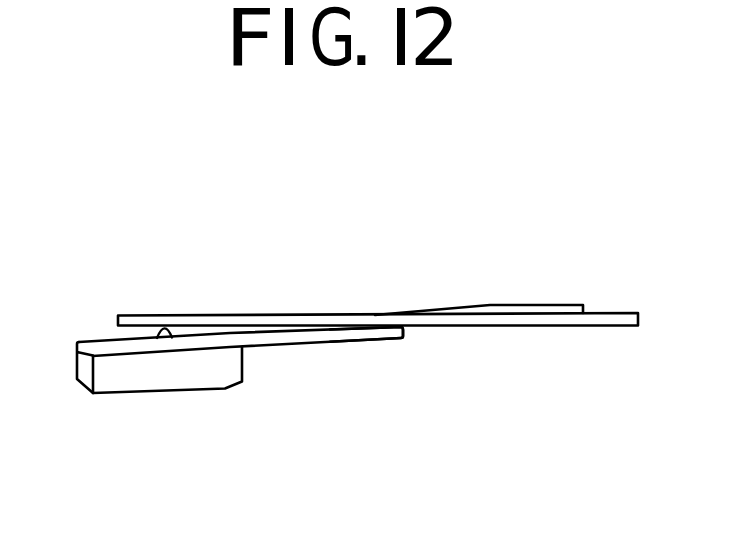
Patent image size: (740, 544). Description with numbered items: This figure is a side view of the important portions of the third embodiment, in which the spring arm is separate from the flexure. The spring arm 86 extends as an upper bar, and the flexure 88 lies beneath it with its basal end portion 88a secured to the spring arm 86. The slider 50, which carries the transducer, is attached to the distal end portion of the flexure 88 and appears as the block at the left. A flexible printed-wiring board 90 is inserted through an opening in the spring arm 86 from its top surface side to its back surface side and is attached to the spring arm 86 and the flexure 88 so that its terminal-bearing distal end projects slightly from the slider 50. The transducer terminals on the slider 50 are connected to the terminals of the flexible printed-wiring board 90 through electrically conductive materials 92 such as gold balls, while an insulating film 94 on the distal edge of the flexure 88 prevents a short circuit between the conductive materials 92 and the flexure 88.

The slider 50 is at (165, 384).
The spring arm 86 is at (208, 315).
The flexure 88 is at (288, 345).
The basal end portion 88a is at (378, 337).
The flexible printed-wiring board 90 is at (526, 305).
The electrically conductive materials 92 is at (77, 379).
The insulating film 94 is at (93, 341).